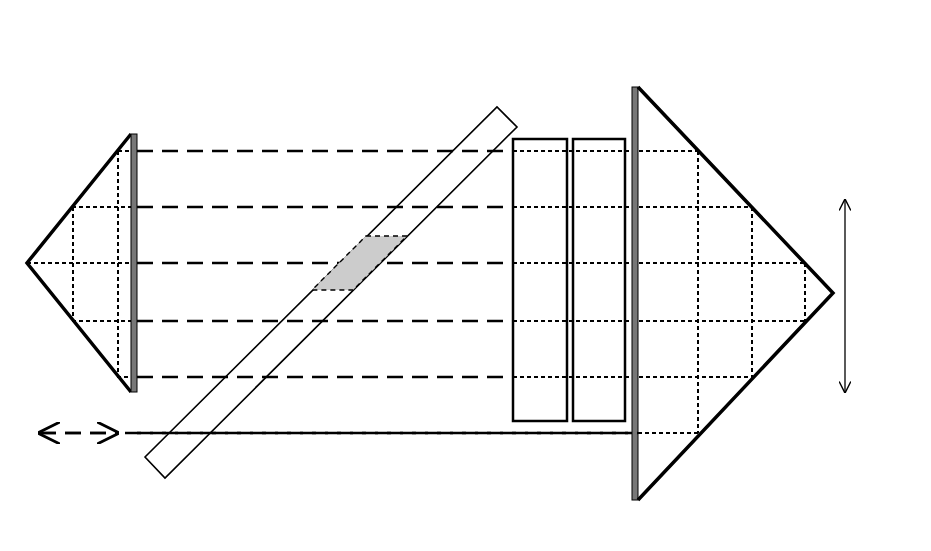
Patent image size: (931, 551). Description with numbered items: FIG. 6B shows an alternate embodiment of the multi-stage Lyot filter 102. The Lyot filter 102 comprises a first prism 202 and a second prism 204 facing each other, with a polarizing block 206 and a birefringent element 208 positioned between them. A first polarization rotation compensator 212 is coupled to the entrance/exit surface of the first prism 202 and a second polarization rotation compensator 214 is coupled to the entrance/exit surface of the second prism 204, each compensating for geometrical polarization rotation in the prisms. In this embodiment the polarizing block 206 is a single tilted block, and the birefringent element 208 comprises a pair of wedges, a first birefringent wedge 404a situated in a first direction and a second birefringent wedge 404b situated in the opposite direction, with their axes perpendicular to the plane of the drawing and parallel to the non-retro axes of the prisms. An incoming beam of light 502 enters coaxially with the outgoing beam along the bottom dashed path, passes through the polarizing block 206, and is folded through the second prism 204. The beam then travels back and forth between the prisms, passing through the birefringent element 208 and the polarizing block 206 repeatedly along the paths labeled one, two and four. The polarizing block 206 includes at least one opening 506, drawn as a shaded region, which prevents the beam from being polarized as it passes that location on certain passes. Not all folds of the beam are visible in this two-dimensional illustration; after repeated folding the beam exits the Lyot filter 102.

The Lyot filter 102 is at (105, 76).
The first prism 202 is at (93, 174).
The second prism 204 is at (713, 166).
The polarizing block 206 is at (185, 460).
The birefringent element 208 is at (548, 442).
The first polarization rotation compensator 212 is at (133, 133).
The second polarization rotation compensator 214 is at (638, 87).
The first birefringent wedge 404a is at (541, 138).
The second birefringent wedge 404b is at (610, 138).
The incoming beam of light 502 is at (62, 437).
The opening 506 is at (346, 260).